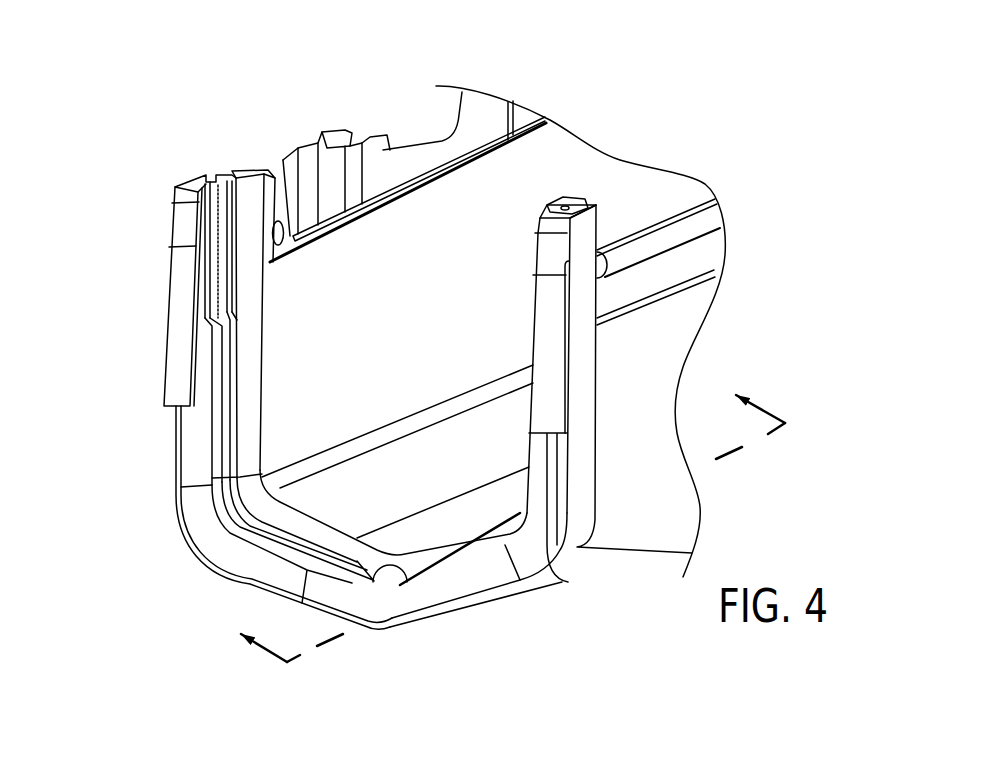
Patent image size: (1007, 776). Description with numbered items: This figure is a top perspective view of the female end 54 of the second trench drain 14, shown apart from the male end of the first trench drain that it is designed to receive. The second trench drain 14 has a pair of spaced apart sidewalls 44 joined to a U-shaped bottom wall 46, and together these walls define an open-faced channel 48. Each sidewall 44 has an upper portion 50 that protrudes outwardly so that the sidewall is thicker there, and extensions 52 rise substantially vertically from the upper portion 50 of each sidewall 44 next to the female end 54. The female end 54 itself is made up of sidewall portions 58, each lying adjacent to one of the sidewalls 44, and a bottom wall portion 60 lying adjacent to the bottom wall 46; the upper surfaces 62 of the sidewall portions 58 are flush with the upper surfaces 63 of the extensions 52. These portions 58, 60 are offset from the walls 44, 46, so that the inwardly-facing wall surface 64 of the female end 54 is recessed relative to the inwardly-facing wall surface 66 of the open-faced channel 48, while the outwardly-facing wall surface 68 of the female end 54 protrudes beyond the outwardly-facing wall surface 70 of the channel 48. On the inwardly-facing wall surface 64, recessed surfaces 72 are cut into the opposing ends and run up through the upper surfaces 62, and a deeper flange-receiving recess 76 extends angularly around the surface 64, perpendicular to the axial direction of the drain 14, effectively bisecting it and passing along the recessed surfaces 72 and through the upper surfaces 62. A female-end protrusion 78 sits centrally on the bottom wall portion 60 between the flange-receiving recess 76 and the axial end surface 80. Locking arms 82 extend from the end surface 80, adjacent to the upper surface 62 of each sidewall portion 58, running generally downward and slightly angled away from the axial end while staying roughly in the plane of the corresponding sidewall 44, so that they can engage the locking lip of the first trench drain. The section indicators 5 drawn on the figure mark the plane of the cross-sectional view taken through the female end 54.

The section line 5- 5 is at (513, 512).
The second trench drain 14 is at (181, 124).
The sidewalls 44 is at (498, 202).
The U-shaped bottom wall 46 is at (437, 461).
The open-faced channel 48 is at (280, 530).
The upper portion 50 is at (690, 265).
The extensions 52 is at (280, 186).
The female end 54 is at (504, 608).
The sidewall portions 58 is at (203, 449).
The bottom wall portion 60 is at (259, 571).
The upper surfaces 62 is at (193, 184).
The upper surfaces 63 is at (256, 172).
The inwardly-facing wall surface 64 is at (275, 546).
The inwardly-facing wall surface 66 is at (488, 432).
The outwardly-facing wall surface 68 is at (584, 443).
The outwardly-facing wall surface 70 is at (667, 331).
The recessed surfaces 72 is at (234, 217).
The flange-receiving recess 76 is at (227, 381).
The female-end protrusion 78 is at (407, 582).
The axial end surface 80 is at (452, 589).
The locking arms 82 is at (163, 336).